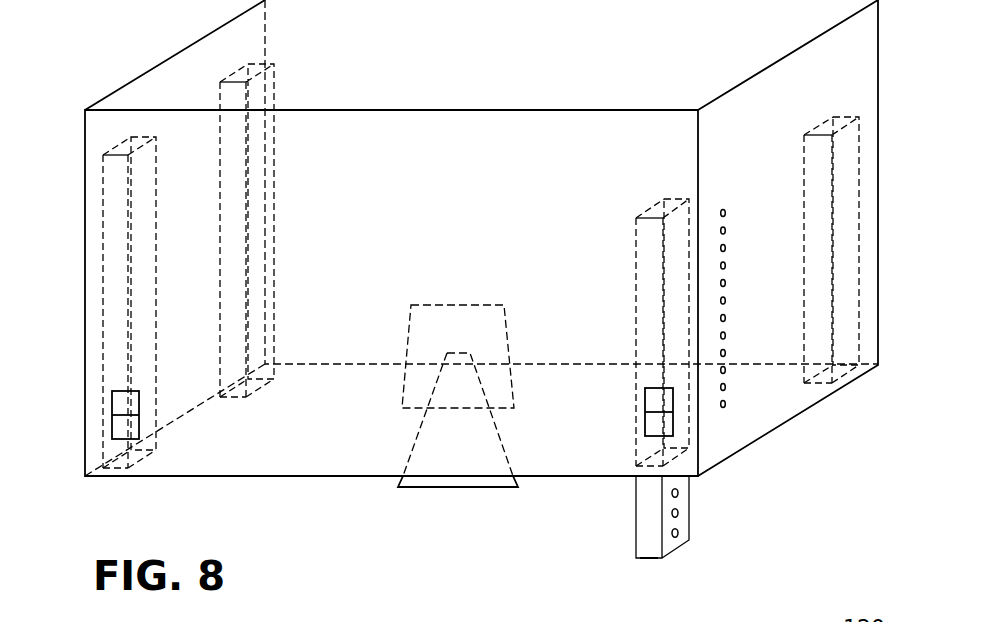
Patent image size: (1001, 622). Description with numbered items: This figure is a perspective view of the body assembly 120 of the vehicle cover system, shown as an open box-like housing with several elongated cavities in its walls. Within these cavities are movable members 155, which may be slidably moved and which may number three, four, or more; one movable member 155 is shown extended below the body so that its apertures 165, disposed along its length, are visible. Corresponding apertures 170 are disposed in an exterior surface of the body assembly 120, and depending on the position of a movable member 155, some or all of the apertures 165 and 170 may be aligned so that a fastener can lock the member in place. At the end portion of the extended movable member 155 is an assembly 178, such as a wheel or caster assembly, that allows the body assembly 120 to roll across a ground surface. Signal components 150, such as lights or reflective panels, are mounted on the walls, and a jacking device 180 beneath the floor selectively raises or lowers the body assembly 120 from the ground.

The body assembly 120 is at (94, 59).
The movable member 155 is at (118, 222).
The signal component 150 is at (120, 403).
The apertures 170 is at (727, 387).
The apertures 165 is at (677, 536).
The assembly 178 is at (648, 560).
The jacking device 180 is at (458, 508).